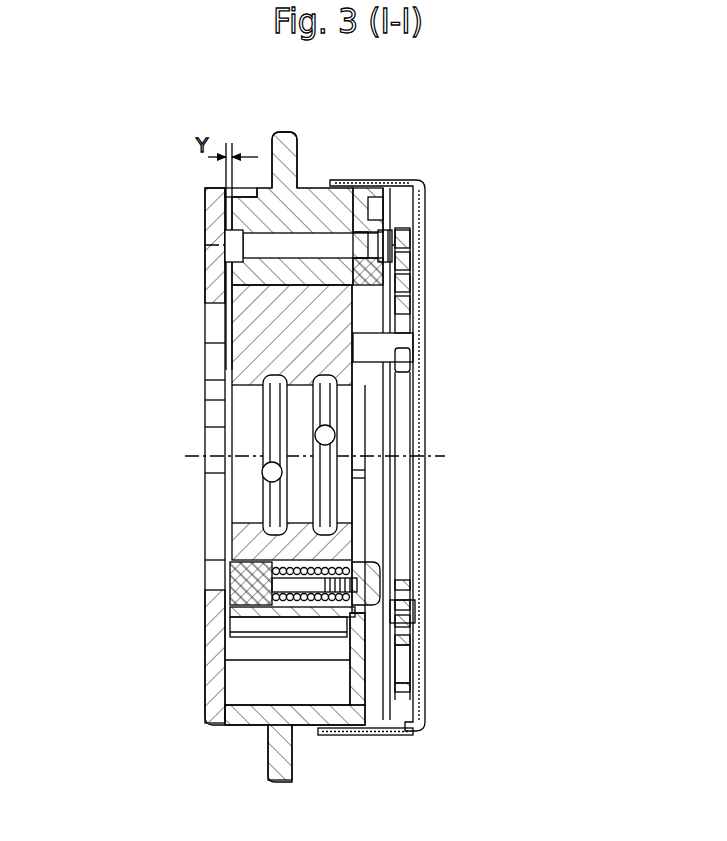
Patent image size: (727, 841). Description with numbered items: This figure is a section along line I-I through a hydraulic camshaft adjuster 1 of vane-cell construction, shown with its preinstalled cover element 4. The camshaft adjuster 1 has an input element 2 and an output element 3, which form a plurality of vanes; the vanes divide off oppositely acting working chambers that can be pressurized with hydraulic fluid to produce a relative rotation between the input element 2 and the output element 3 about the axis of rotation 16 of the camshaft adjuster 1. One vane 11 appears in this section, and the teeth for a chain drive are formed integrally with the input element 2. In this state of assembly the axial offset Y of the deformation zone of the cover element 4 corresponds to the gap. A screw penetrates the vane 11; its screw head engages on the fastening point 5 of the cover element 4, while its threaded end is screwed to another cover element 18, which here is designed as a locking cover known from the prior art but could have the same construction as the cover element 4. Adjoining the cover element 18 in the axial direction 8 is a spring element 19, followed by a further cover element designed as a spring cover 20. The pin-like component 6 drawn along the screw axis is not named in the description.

The hydraulic camshaft adjuster 1 is at (92, 180).
The input element 2 is at (314, 198).
The vane 11 is at (290, 203).
The output element 3 is at (313, 322).
The cover element 4 is at (222, 310).
The fastening point 5 is at (226, 247).
The pin 6 is at (265, 238).
The axial direction 8 is at (577, 463).
The axis of rotation 16 is at (430, 455).
The cover element 18 is at (360, 202).
The spring element 19 is at (410, 252).
The spring cover 20 is at (422, 180).